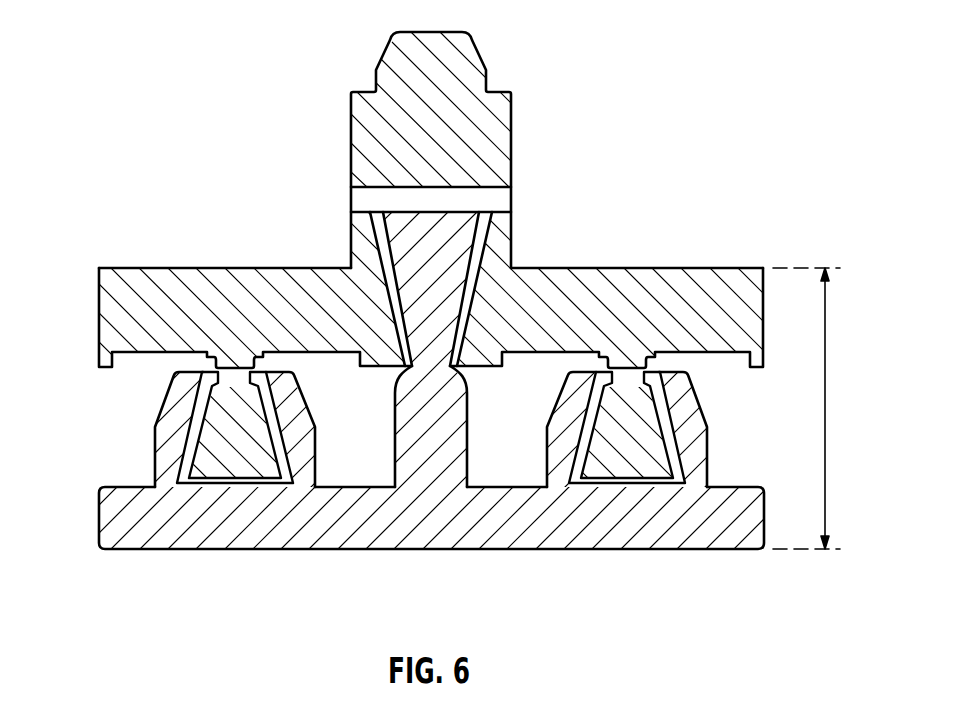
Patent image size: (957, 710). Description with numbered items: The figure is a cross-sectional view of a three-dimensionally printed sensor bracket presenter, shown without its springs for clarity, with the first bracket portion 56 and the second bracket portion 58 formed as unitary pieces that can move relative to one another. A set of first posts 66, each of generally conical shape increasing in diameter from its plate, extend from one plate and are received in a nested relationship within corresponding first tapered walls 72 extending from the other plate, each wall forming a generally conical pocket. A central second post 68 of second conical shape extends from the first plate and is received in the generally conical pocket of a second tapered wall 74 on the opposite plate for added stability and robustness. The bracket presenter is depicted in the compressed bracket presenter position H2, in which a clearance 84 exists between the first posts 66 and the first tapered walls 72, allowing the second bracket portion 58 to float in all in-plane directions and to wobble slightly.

The first bracket portion 56 is at (713, 537).
The second bracket portion 58 is at (118, 317).
The first posts 66 is at (238, 468).
The second post 68 is at (464, 233).
The first tapered walls 72 is at (170, 422).
The second tapered wall 74 is at (364, 226).
The clearance 84 is at (374, 203).
The compressed bracket presenter position H2 is at (825, 405).